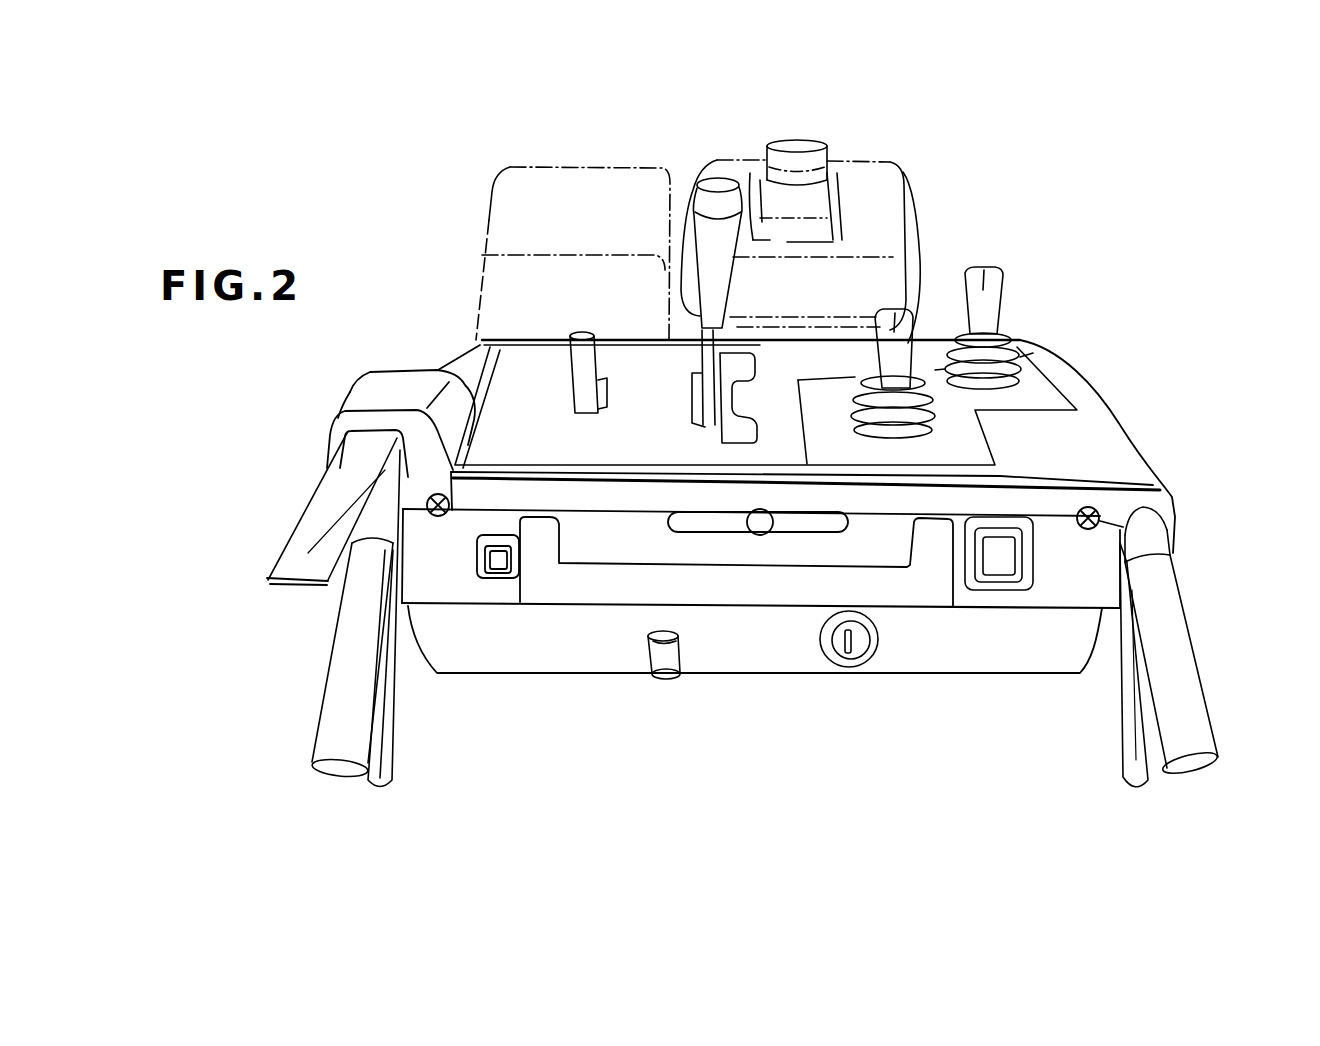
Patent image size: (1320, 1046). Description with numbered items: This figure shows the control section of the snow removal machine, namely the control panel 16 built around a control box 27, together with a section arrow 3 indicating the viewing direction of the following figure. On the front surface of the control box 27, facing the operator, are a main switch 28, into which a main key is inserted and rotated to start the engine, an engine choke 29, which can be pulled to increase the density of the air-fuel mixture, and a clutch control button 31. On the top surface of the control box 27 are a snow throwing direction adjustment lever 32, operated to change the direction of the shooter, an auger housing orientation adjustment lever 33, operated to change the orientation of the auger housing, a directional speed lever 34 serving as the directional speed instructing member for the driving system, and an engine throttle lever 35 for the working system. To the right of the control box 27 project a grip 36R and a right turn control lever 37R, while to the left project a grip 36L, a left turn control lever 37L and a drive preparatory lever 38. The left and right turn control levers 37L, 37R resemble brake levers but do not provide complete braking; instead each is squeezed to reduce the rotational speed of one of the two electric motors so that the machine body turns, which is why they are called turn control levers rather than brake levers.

The control panel 16 is at (1075, 346).
The control box 27 is at (1095, 444).
The main switch 28 is at (857, 662).
The engine choke 29 is at (666, 678).
The clutch control button 31 is at (998, 557).
The snow throwing direction adjustment lever 32 is at (983, 280).
The auger housing orientation adjustment lever 33 is at (900, 333).
The directional speed lever 34 is at (715, 203).
The engine throttle lever 35 is at (580, 347).
The grip 36L is at (337, 712).
The grip 36R is at (1190, 697).
The left turn control lever 37L is at (396, 790).
The right turn control lever 37R is at (1120, 727).
The drive preparatory lever 38 is at (308, 550).
The section line of FIG. 3 is at (232, 548).